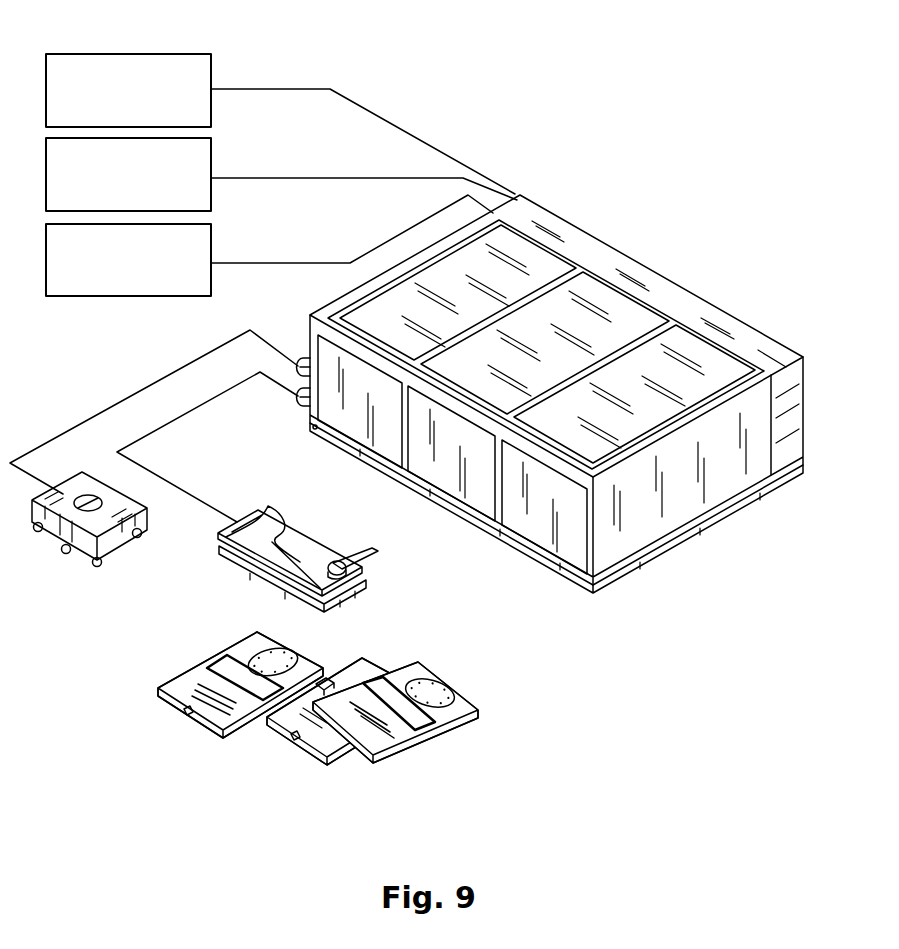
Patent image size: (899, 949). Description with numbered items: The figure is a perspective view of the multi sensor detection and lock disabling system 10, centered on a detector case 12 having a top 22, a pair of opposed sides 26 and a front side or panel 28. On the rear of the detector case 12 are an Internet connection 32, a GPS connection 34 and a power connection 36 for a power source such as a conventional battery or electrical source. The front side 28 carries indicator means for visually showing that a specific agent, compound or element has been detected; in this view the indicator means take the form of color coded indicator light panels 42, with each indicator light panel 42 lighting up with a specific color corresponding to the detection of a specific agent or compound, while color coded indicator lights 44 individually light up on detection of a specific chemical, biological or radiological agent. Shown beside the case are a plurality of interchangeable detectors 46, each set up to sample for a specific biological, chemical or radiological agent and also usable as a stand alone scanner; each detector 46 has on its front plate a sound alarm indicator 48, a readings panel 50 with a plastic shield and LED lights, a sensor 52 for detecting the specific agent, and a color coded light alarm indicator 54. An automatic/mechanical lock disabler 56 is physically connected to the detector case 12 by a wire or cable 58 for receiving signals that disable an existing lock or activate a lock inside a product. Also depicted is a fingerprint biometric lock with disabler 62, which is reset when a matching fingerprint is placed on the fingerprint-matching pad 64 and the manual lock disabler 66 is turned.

The multi sensor detection and lock disabling system 10 is at (696, 209).
The detector case 12 is at (690, 540).
The top 22 is at (577, 233).
The opposed sides 26 is at (756, 475).
The front side or panel 28 is at (540, 562).
The Internet connection 32 is at (140, 54).
The GPS connection 34 is at (211, 152).
The power connection 36 is at (211, 240).
The color coded indicator light panels 42 is at (312, 345).
The color coded indicator lights 44 is at (413, 450).
The detectors 46 is at (160, 690).
The sound alarm indicator 48 is at (198, 684).
The readings panel 50 is at (421, 728).
The sensor 52 is at (258, 645).
The light alarm indicator 54 is at (188, 716).
The automatic/mechanical lock disabler 56 is at (52, 536).
The wire or cable 58 is at (75, 428).
The fingerprint biometric lock with disabler 62 is at (254, 519).
The fingerprint-matching pad 64 is at (268, 508).
The manual lock disabler 66 is at (362, 553).